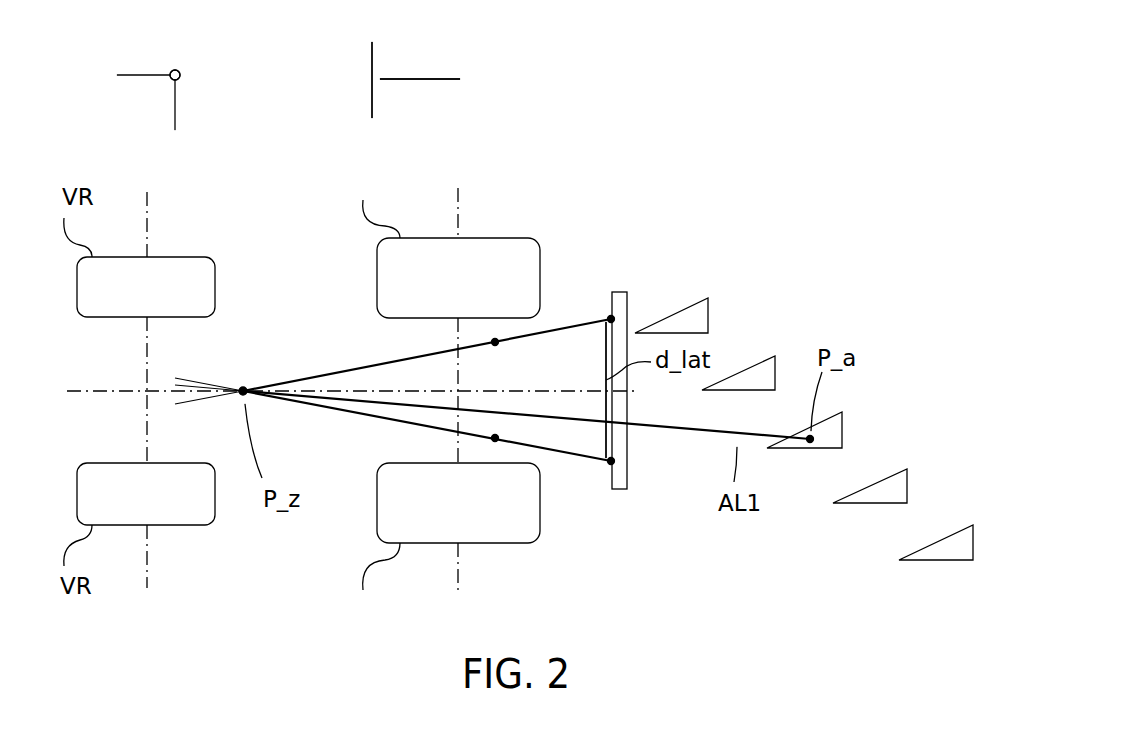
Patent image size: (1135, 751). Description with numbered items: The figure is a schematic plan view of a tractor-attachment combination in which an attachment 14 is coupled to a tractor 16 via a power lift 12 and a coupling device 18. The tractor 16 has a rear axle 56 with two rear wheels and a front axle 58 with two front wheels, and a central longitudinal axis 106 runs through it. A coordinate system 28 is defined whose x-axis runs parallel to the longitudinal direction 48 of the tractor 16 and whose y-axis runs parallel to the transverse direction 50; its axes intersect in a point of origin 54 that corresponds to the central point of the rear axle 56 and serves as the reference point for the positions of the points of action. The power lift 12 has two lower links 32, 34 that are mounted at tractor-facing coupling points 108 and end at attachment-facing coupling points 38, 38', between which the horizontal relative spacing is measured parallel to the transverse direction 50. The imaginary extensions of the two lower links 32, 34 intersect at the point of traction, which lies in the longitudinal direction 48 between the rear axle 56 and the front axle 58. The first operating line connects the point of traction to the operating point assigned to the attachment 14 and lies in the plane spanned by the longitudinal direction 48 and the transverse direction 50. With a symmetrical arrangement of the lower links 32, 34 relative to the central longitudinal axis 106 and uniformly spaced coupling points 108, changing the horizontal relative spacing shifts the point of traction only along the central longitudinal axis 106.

The power lift 12 is at (592, 305).
The attachment 14 is at (750, 296).
The tractor 16 is at (312, 211).
The coupling device 18 is at (642, 452).
The coordinate system 28 is at (132, 98).
The lower link 32 is at (557, 315).
The lower link 34 is at (572, 468).
The coupling point 38 is at (646, 483).
The coupling point 38' is at (652, 287).
The longitudinal direction 48 is at (431, 79).
The transverse direction 50 is at (372, 90).
The point of origin 54 is at (468, 385).
The rear axle 56 is at (176, 67).
The front axle 58 is at (148, 200).
The central longitudinal axis 106 is at (93, 390).
The coupling points 108 is at (495, 340).